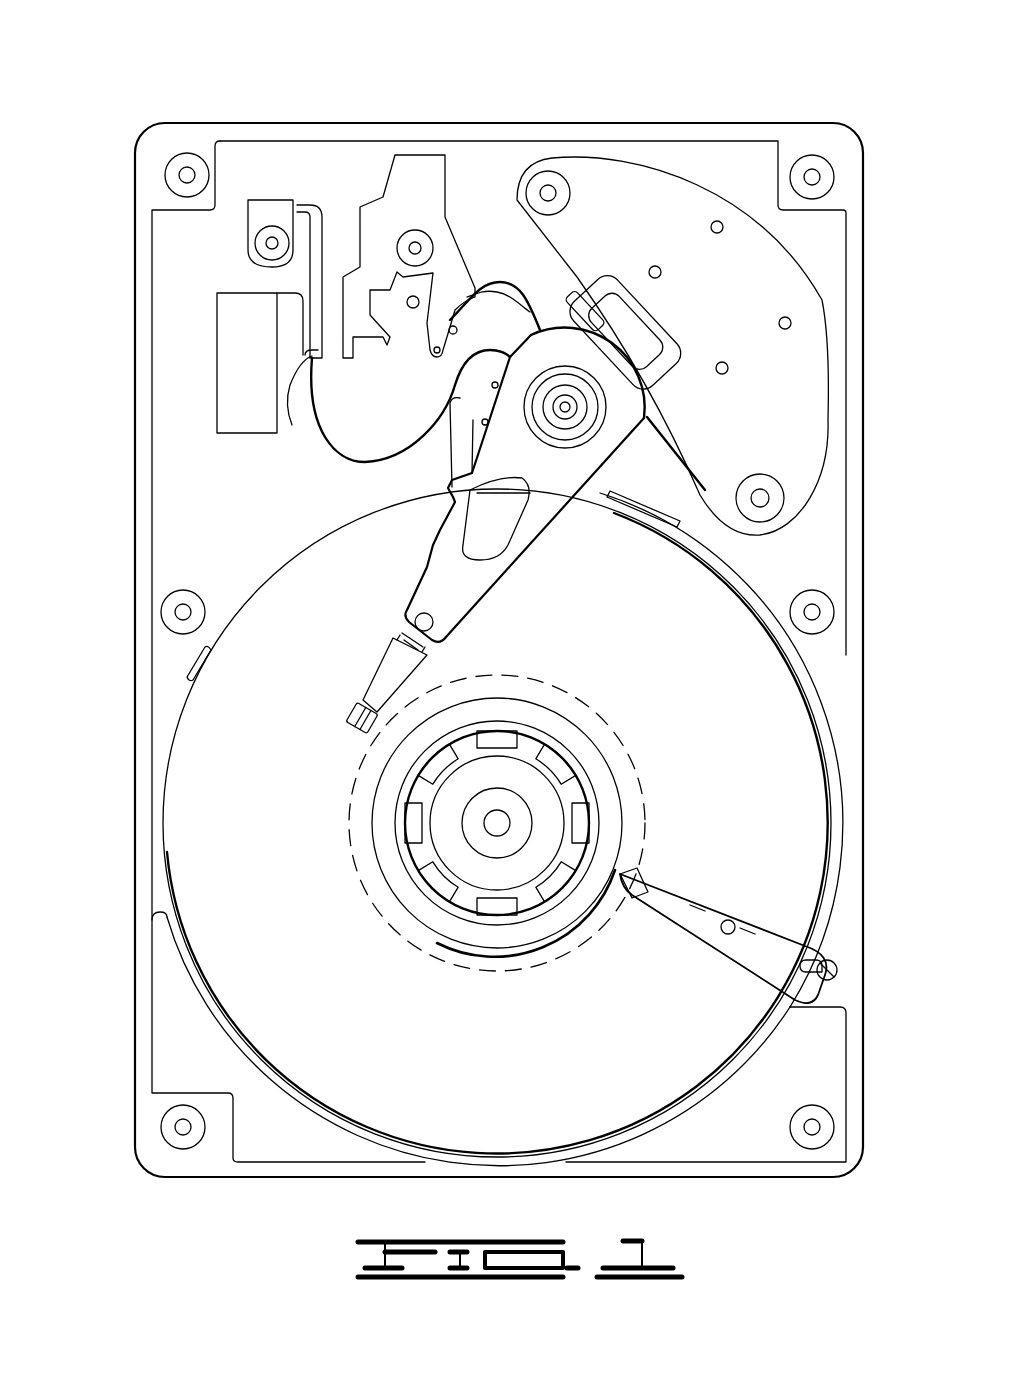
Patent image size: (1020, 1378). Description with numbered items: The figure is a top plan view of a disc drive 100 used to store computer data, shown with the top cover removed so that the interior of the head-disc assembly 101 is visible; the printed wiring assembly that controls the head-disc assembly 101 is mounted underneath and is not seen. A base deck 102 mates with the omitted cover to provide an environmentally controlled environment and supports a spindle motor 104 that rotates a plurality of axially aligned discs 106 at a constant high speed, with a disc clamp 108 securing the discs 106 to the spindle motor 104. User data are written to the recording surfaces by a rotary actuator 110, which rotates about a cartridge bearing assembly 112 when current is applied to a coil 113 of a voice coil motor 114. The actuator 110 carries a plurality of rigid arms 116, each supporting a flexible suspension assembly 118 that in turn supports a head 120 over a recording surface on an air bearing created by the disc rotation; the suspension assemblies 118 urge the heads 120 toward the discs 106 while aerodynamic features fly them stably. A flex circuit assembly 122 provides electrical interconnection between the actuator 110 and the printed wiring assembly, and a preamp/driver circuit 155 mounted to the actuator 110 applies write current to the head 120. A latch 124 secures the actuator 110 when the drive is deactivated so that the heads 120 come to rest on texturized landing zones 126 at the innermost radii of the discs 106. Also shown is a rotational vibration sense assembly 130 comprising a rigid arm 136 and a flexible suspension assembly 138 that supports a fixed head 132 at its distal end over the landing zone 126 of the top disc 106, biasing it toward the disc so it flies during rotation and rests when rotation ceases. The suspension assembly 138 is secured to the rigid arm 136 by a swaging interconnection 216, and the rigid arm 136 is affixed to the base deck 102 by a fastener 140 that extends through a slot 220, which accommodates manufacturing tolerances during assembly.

The disc drive 100 is at (246, 88).
The head-disc assembly 101 is at (164, 162).
The base deck 102 is at (235, 505).
The spindle motor 104 is at (505, 852).
The discs 106 is at (752, 783).
The disc clamp 108 is at (393, 872).
The rotary actuator 110 is at (540, 487).
The cartridge bearing assembly 112 is at (573, 420).
The coil 113 is at (675, 325).
The voice coil motor 114 is at (603, 232).
The rigid arms 116 is at (432, 597).
The flexible suspension assembly 118 is at (370, 670).
The head 120 is at (345, 718).
The flex circuit assembly 122 is at (353, 459).
The latch 124 is at (418, 180).
The landing zones 126 is at (607, 720).
The rotational vibration sense assembly 130 is at (731, 983).
The fixed head 132 is at (630, 872).
The rigid arm 136 is at (762, 935).
The flexible suspension assembly 138 is at (687, 915).
The fastener 140 is at (838, 982).
The preamp/driver circuit 155 is at (448, 455).
The swaging interconnection 216 is at (730, 918).
The slot 220 is at (820, 957).